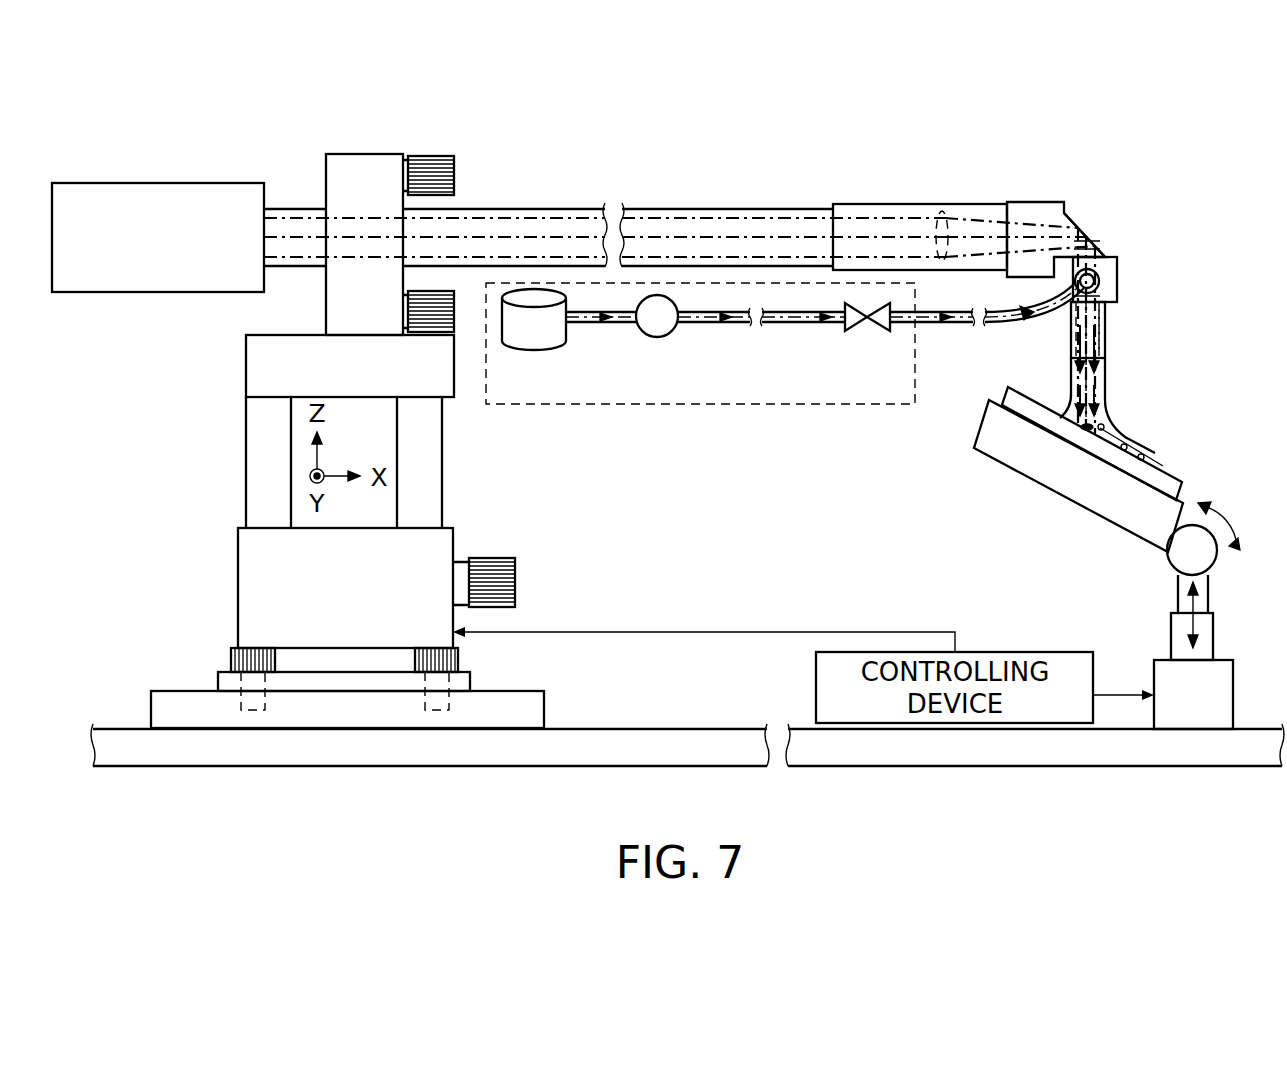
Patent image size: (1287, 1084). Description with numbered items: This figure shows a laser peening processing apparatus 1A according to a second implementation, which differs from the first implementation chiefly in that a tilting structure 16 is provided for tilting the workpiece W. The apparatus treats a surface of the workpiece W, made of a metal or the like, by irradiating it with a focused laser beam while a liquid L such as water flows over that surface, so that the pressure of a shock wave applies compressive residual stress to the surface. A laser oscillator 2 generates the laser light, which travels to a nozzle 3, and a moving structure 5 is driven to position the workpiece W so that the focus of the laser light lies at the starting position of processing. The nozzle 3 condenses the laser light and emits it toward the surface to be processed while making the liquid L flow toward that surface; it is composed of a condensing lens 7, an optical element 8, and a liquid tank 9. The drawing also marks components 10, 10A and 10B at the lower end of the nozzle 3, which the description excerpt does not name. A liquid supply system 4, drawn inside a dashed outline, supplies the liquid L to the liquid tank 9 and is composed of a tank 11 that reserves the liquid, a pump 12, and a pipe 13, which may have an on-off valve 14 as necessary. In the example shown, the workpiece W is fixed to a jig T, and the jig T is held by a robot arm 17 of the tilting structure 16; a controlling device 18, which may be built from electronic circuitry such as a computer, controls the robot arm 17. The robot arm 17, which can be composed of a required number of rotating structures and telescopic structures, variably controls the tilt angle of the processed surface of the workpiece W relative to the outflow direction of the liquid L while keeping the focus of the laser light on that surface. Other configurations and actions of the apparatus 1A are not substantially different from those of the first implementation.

The laser peening processing apparatus 1A is at (1229, 107).
The laser oscillator 2 is at (244, 183).
The nozzle 3 is at (1160, 170).
The liquid supply system 4 is at (862, 406).
The moving structure 5 is at (246, 364).
The condensing lens 7 is at (950, 207).
The optical element 8 is at (1102, 252).
The liquid tank 9 is at (1118, 281).
The nozzle 10 is at (1107, 329).
The nozzle outer tube 10A is at (1071, 324).
The nozzle inner tube 10B is at (1076, 356).
The tank 11 is at (538, 347).
The pump 12 is at (668, 337).
The pipe 13 is at (798, 322).
The on-off valve 14 is at (872, 331).
The tilting structure 16 is at (1085, 568).
The robot arm 17 is at (1103, 521).
The controlling device 18 is at (1003, 652).
The workpiece W is at (1003, 390).
The jig T is at (988, 404).
The liquid L is at (1077, 400).